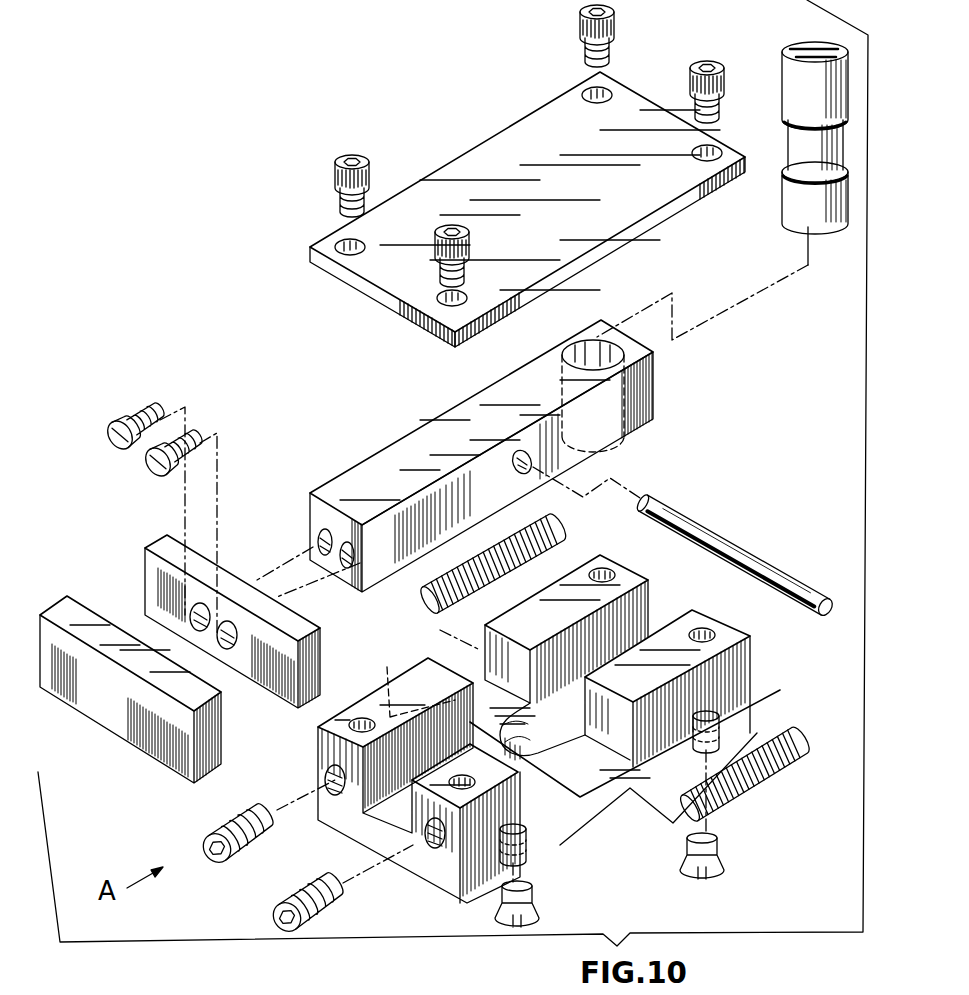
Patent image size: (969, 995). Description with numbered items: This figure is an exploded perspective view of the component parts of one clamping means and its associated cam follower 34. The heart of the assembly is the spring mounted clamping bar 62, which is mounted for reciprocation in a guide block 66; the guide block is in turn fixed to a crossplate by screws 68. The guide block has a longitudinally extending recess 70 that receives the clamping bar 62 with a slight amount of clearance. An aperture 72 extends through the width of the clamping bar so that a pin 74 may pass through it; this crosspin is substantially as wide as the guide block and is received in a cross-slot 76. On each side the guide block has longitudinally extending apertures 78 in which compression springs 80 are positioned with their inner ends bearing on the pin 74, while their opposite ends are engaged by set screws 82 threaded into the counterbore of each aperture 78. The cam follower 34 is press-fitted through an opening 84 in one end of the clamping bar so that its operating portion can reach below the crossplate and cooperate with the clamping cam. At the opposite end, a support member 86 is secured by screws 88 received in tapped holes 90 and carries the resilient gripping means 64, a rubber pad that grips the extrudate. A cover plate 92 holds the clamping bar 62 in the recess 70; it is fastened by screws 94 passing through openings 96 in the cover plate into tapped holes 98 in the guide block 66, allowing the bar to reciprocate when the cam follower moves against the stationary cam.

The cam follower 34 is at (792, 190).
The clamping bar 62 is at (389, 465).
The resilient gripping means 64 is at (155, 735).
The guide block 66 is at (745, 716).
The screws 68 is at (717, 855).
The longitudinally extending recess 70 is at (353, 842).
The aperture 72 is at (530, 468).
The pin 74 is at (708, 526).
The cross-slot 76 is at (466, 665).
The longitudinally extending apertures 78 is at (534, 808).
The compression springs 80 is at (550, 529).
The set screws 82 is at (268, 840).
The opening 84 is at (587, 342).
The support member 86 is at (152, 566).
The screws 88 is at (143, 412).
The tapped holes 90 is at (320, 537).
The cover plate 92 is at (485, 158).
The screws 94 is at (580, 42).
The openings 96 is at (608, 86).
The tapped holes 98 is at (358, 717).